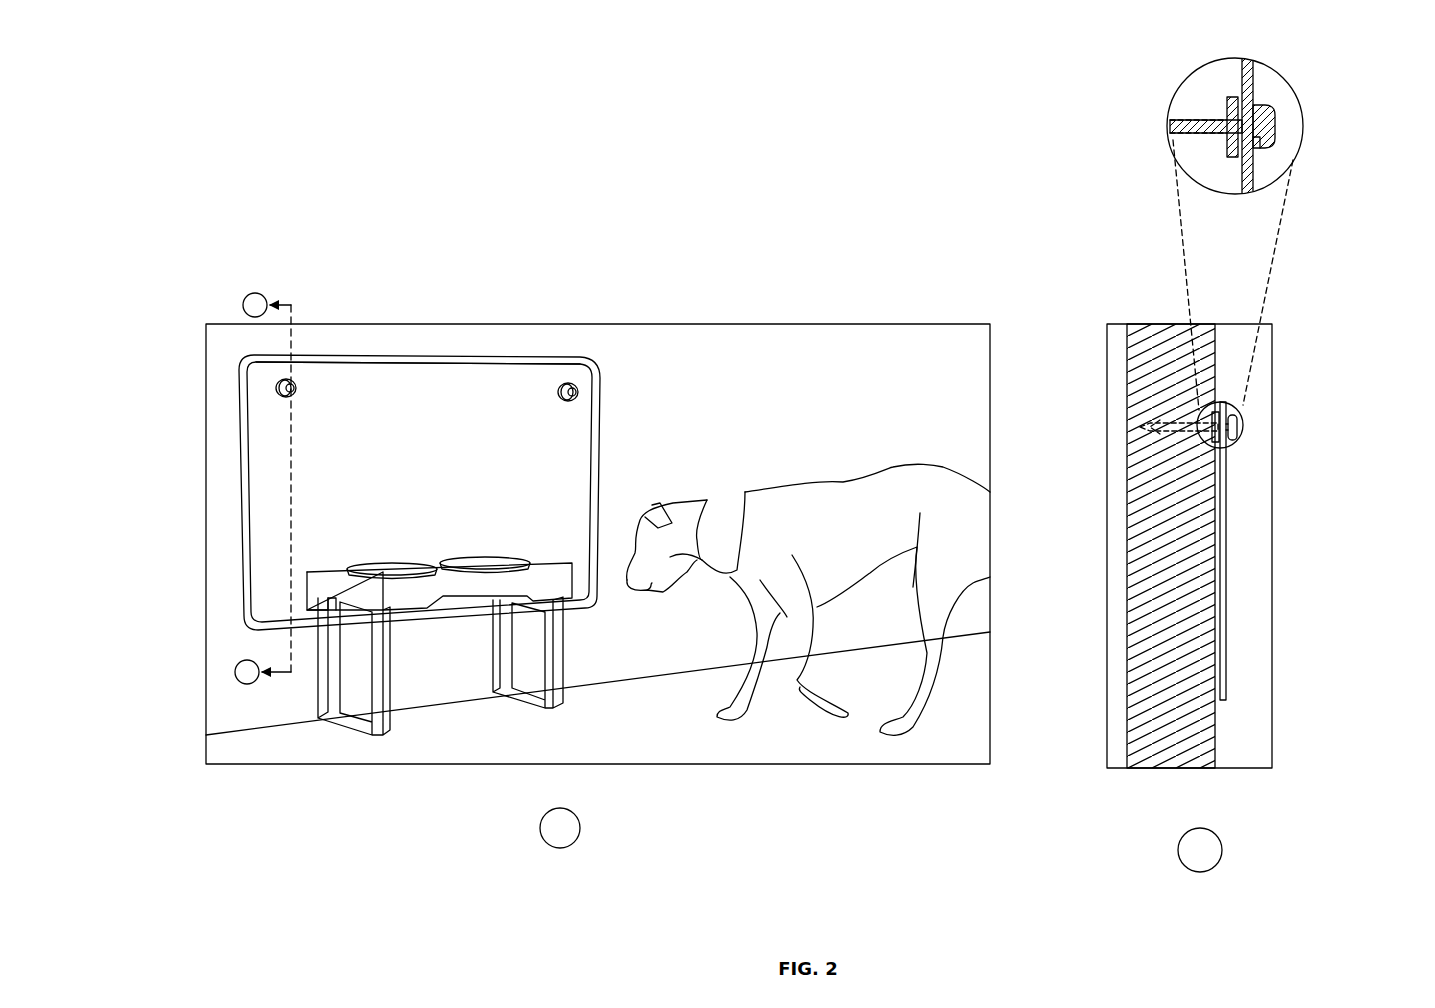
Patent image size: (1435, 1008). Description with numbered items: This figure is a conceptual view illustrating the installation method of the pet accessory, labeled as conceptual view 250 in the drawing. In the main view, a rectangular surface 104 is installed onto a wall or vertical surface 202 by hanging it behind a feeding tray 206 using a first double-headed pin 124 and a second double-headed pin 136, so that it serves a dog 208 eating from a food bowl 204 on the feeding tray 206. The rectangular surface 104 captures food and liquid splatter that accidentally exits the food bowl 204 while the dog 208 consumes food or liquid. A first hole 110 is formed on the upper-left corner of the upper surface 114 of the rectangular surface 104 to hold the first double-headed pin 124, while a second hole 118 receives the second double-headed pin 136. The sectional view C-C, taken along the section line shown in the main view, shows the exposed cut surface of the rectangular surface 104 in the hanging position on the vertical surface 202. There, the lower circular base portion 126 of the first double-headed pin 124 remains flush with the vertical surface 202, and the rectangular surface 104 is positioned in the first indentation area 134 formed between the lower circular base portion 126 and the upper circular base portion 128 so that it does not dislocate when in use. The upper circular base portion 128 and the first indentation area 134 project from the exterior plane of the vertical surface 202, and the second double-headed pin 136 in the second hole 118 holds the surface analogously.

The vertical surface 202 is at (1145, 330).
The rectangular surface 104 is at (597, 467).
The upper surface 114 is at (383, 377).
The first hole 110 is at (1180, 422).
The second hole 118 is at (558, 383).
The first double-headed pin 124 is at (292, 392).
The second double-headed pin 136 is at (580, 397).
The lower circular base portion 126 is at (1213, 443).
The upper circular base portion 128 is at (1240, 420).
The first indentation area 134 is at (1253, 150).
The food bowl 204 is at (405, 563).
The feeding tray 206 is at (333, 588).
The dog 208 is at (857, 477).
The conceptual view 250 is at (258, 830).